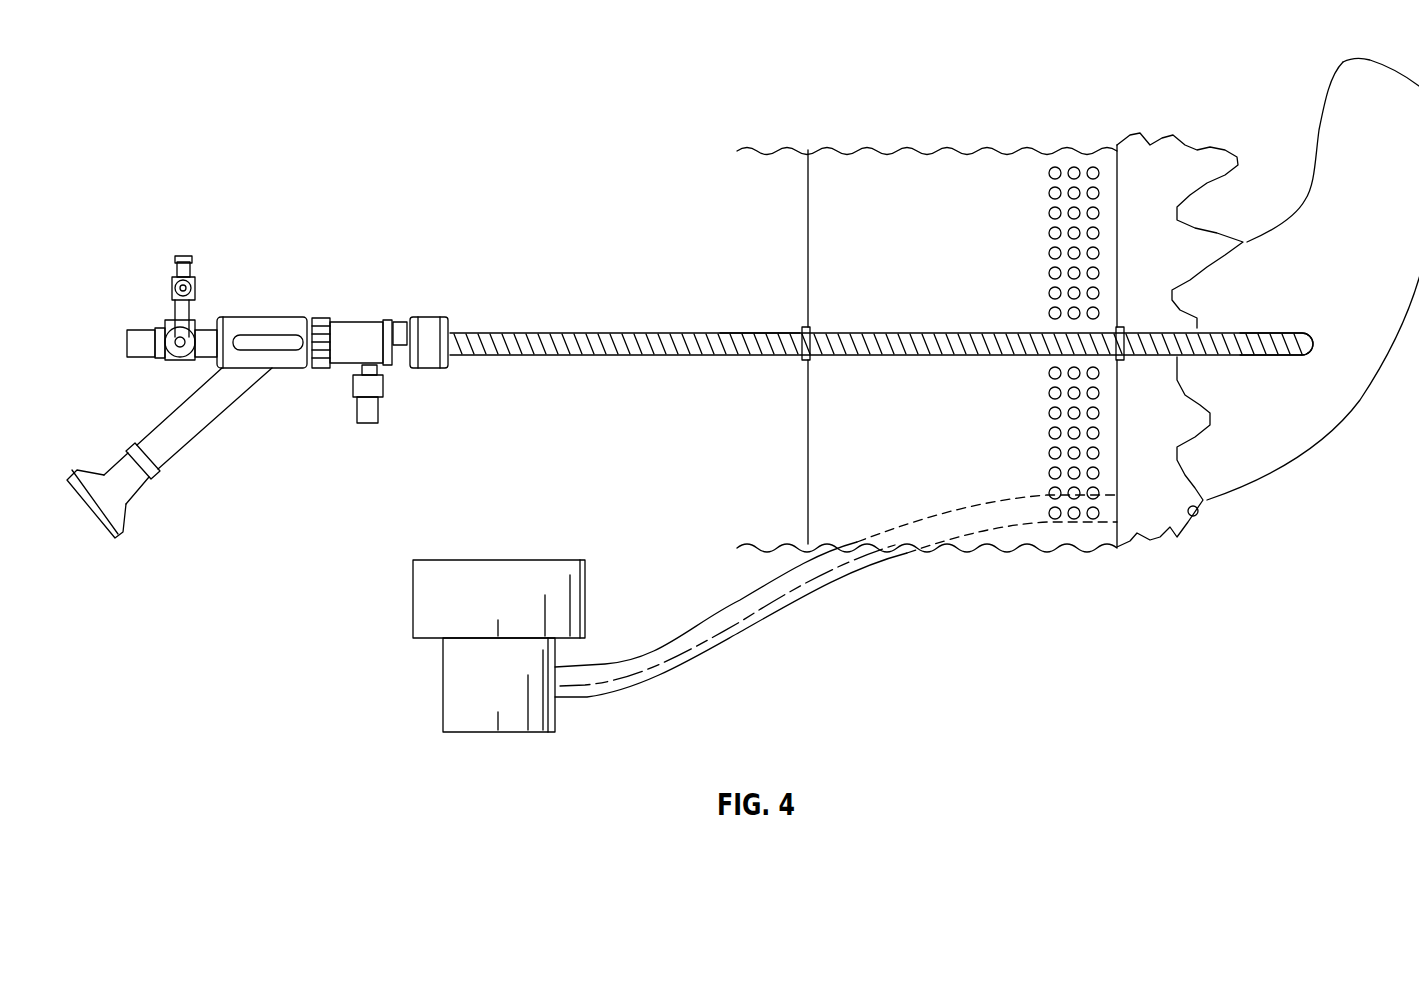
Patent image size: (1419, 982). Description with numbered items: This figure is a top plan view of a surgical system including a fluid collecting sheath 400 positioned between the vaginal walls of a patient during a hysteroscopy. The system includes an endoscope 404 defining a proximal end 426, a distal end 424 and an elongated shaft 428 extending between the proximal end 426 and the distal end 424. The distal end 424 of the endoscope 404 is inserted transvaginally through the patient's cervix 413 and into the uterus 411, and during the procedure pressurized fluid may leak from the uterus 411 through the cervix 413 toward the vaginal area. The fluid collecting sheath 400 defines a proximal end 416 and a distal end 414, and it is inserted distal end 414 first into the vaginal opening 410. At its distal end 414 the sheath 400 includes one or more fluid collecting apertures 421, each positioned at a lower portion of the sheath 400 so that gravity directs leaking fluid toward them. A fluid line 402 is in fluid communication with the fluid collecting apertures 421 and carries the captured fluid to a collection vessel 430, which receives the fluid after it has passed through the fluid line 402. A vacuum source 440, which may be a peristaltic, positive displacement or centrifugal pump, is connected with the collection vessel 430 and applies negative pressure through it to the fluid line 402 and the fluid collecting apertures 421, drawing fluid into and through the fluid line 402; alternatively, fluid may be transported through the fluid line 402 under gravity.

The fluid collecting sheath 400 is at (862, 185).
The fluid line 402 is at (738, 647).
The endoscope 404 is at (270, 315).
The vaginal opening 410 is at (1165, 162).
The uterus 411 is at (1278, 472).
The cervix 413 is at (1207, 507).
The distal end 414 is at (1122, 326).
The proximal end 416 is at (805, 325).
The fluid collecting apertures 421 is at (1090, 489).
The distal end 424 is at (1263, 332).
The proximal end 426 is at (485, 330).
The elongated shaft 428 is at (752, 332).
The collection vessel 430 is at (443, 683).
The vacuum source 440 is at (515, 560).